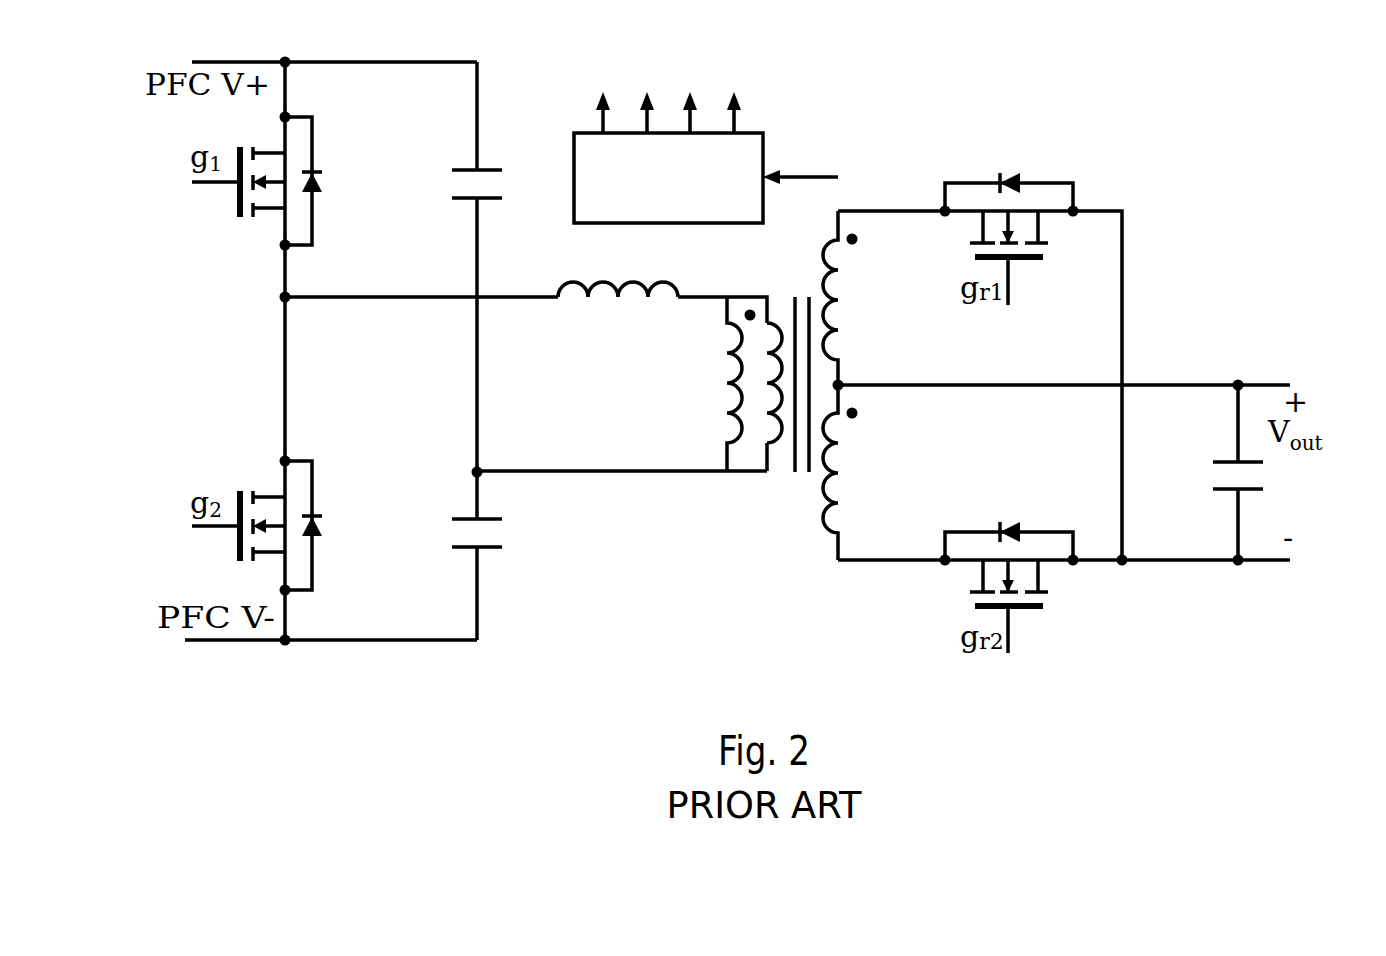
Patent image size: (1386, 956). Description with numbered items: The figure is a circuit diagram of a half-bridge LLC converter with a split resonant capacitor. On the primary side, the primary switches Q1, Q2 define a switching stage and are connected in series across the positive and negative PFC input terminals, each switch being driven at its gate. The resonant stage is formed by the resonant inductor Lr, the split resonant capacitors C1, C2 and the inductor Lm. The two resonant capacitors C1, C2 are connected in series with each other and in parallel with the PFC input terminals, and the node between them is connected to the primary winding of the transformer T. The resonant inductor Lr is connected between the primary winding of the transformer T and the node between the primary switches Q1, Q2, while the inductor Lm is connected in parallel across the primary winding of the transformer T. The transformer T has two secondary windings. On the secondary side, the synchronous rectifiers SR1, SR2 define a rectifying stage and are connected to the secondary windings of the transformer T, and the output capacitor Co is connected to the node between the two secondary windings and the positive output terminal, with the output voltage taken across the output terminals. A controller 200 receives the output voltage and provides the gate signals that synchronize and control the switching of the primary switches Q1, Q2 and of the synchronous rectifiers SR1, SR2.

The controller 200 is at (763, 134).
The primary switch Q1 is at (277, 175).
The primary switch Q2 is at (277, 520).
The resonant capacitor C1 is at (498, 188).
The resonant capacitor C2 is at (499, 534).
The resonant inductor Lr is at (618, 271).
The inductor Lm is at (707, 384).
The transformer T is at (801, 385).
The synchronous rectifier SR1 is at (978, 235).
The synchronous rectifier SR2 is at (978, 584).
The output capacitor Co is at (1223, 473).